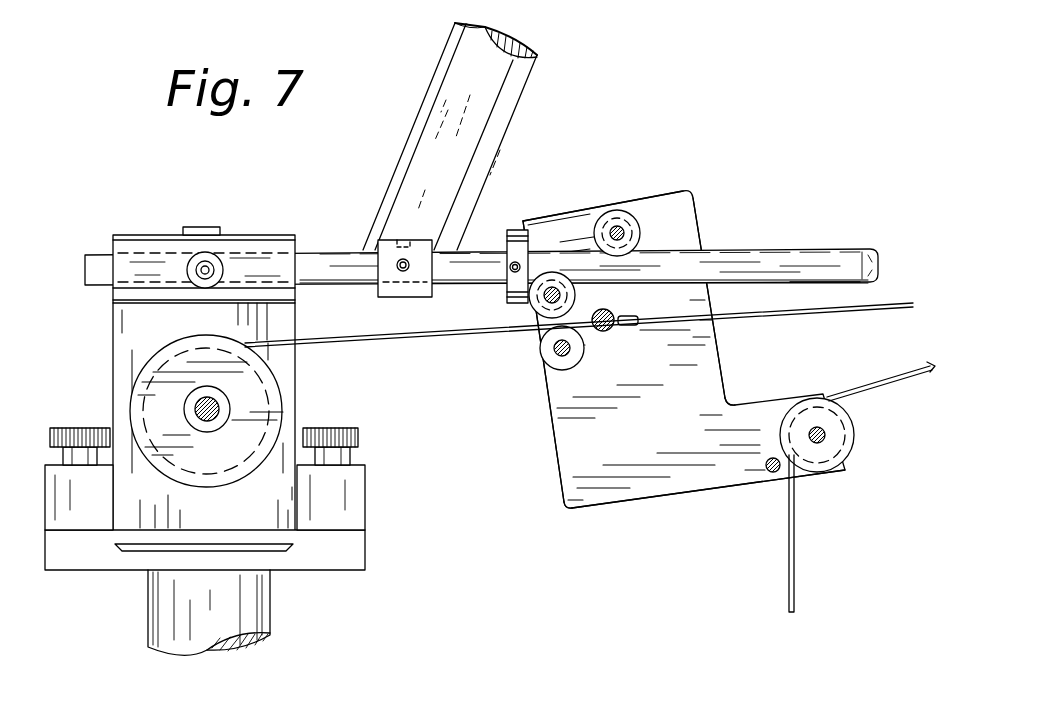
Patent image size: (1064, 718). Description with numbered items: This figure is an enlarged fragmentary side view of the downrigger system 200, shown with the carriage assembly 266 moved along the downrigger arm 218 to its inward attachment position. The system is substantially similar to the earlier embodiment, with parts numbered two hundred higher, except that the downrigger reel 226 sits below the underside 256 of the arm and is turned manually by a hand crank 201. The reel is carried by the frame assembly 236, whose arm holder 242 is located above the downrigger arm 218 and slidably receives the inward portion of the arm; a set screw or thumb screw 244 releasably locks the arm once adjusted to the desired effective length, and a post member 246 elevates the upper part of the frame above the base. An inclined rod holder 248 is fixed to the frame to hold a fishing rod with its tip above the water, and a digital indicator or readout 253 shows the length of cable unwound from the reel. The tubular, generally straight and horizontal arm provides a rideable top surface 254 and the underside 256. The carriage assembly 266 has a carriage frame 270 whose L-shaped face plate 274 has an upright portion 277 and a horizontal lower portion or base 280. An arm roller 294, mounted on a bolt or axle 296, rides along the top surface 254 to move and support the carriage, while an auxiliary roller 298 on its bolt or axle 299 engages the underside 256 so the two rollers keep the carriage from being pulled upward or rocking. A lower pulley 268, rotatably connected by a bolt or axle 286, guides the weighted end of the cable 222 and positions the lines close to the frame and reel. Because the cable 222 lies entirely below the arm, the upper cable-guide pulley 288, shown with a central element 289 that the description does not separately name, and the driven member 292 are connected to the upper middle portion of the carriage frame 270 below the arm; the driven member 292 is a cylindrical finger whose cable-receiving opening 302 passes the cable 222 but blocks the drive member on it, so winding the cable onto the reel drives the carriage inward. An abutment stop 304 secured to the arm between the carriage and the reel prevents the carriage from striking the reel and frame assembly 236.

The downrigger system 200 is at (647, 365).
The hand crank 201 is at (203, 412).
The downrigger arm 218 is at (467, 259).
The cable 222 is at (363, 341).
The downrigger reel 226 is at (202, 399).
The frame assembly 236 is at (303, 569).
The arm holder 242 is at (204, 237).
The set screw or thumb screw 244 is at (210, 262).
The post member 246 is at (255, 615).
The rod holder 248 is at (433, 117).
The digital indicator or readout 253 is at (208, 228).
The rideable top surface 254 is at (817, 247).
The underside 256 is at (797, 284).
The carriage assembly 266 is at (667, 340).
The lower pulley 268 is at (845, 450).
The carriage frame 270 is at (693, 190).
The face plate 274 is at (558, 465).
The upright portion 277 is at (700, 233).
The horizontal lower portion or base 280 is at (652, 503).
The bolt or axle 286 is at (851, 438).
The upper cable-guide pulley 288 is at (526, 360).
The pulley hub 289 is at (552, 348).
The driven member 292 is at (607, 331).
The arm roller 294 is at (643, 210).
The bolt or axle 296 is at (620, 232).
The auxiliary roller 298 is at (553, 298).
The bolt or axle 299 is at (562, 297).
The cable-receiving opening 302 is at (626, 326).
The abutment stop 304 is at (517, 230).